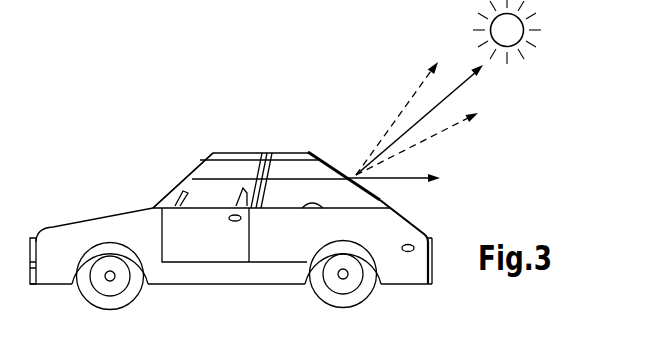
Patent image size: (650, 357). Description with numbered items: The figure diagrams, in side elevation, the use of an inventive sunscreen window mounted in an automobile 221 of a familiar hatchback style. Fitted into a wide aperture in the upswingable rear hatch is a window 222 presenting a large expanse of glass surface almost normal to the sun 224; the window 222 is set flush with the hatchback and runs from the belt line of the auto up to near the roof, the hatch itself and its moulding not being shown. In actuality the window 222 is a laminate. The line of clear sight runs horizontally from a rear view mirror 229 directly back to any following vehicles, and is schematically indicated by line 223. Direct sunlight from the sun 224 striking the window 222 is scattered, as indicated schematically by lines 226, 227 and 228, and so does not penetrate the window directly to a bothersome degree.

The automobile 221 is at (205, 284).
The window 222 is at (396, 197).
The line of clear sight 223 is at (405, 177).
The sun 224 is at (512, 32).
The scattered sunlight line 226 is at (410, 90).
The scattered sunlight line 227 is at (423, 112).
The scattered sunlight line 228 is at (448, 125).
The rear view mirror 229 is at (188, 180).